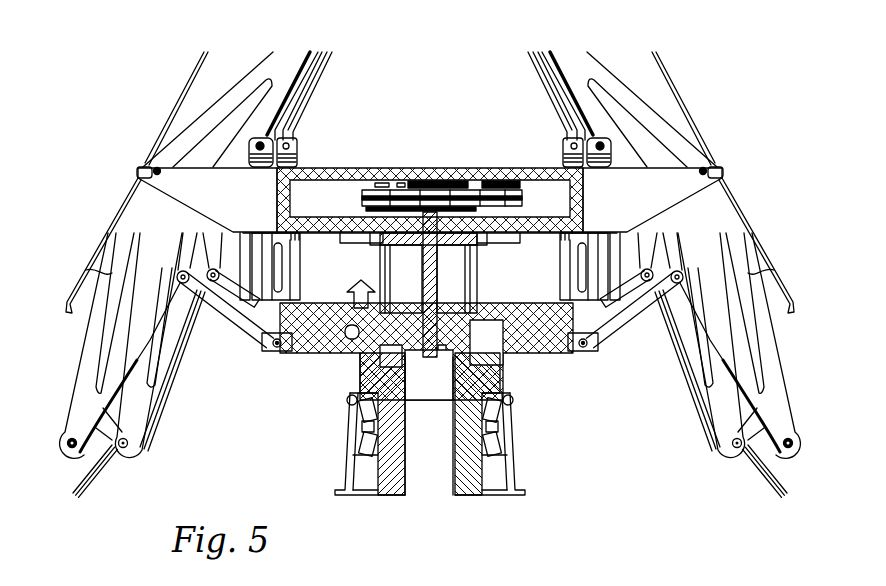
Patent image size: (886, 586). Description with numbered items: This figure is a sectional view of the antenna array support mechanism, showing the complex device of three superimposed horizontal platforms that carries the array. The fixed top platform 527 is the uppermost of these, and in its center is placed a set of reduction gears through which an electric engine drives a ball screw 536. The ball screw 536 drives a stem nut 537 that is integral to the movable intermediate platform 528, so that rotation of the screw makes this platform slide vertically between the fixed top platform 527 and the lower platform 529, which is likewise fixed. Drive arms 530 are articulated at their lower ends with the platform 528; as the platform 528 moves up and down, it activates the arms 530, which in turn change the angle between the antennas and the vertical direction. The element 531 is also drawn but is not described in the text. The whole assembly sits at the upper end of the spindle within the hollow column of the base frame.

The fixed top platform 527 is at (342, 168).
The movable intermediate platform 528 is at (345, 320).
The lower platform 529 is at (345, 358).
The drive arms 530 is at (263, 268).
The strut 531 is at (240, 312).
The ball screw 536 is at (432, 282).
The stem nut 537 is at (447, 353).